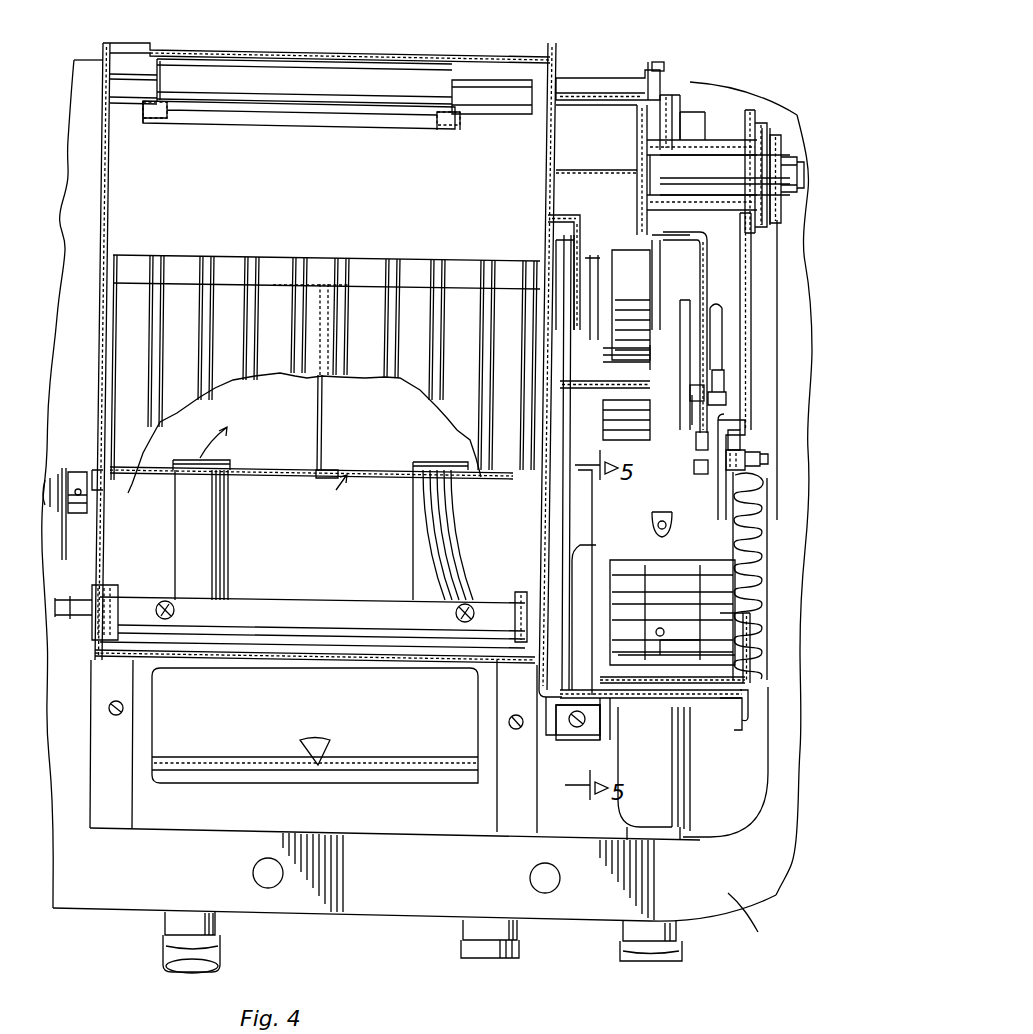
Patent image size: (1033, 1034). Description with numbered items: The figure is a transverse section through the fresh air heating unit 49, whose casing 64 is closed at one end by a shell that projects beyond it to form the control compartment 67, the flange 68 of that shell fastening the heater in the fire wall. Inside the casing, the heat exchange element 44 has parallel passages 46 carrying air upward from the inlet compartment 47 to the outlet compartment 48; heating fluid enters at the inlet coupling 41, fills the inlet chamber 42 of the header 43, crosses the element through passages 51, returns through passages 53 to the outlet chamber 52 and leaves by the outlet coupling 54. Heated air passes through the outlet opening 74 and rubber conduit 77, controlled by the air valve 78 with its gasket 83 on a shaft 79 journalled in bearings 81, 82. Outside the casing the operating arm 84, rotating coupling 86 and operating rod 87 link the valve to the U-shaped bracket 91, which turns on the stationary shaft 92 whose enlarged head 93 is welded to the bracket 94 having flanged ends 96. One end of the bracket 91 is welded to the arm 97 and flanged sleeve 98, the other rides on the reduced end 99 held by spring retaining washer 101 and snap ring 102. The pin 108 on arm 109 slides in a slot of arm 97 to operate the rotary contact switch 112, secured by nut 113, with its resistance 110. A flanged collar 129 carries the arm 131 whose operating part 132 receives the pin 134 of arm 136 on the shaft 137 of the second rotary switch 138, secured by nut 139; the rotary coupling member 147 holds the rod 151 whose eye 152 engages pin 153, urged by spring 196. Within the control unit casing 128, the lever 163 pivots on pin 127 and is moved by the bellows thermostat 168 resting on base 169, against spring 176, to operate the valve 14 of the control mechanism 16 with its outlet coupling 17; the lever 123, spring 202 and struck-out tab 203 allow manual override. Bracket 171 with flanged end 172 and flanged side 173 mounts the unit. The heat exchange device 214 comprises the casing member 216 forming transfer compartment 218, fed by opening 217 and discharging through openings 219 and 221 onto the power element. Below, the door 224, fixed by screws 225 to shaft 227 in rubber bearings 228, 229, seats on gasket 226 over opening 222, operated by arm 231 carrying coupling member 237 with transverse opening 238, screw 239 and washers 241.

The heating fluid control valve 14 is at (692, 776).
The temperature responsive heating fluid control mechanism 16 is at (741, 619).
The outlet coupling 17 is at (623, 940).
The inlet coupling 41 is at (218, 506).
The inlet chamber 42 is at (278, 466).
The heating fluid header 43 is at (331, 495).
The heat exchange element 44 is at (191, 245).
The parallel passages 46 is at (375, 282).
The inlet compartment 47 is at (118, 549).
The outlet compartment 48 is at (128, 159).
The fresh air heating unit 49 is at (371, 42).
The heating fluid passages 51 is at (295, 272).
The outlet chamber 52 is at (385, 462).
The heating fluid passages 53 is at (445, 292).
The outlet coupling 54 is at (425, 547).
The casing 64 is at (474, 55).
The control compartment 67 is at (748, 816).
The flange 68 is at (758, 926).
The outlet opening 74 is at (418, 70).
The rubber conduit 77 is at (190, 120).
The air valve 78 is at (300, 72).
The shaft 79 is at (322, 105).
The bearing 81 is at (120, 90).
The bearing 82 is at (495, 82).
The gasket 83 is at (450, 126).
The operating arm 84 is at (648, 62).
The rotating coupling 86 is at (670, 92).
The operating rod 87 is at (662, 62).
The U-shaped bracket 91 is at (684, 100).
The stationary shaft 92 is at (655, 163).
The enlarged head 93 is at (640, 134).
The bracket 94 is at (602, 78).
The flanged ends 96 is at (560, 72).
The arm 97 is at (708, 264).
The flanged sleeve 98 is at (690, 128).
The reduced end 99 is at (790, 174).
The spring retaining washer 101 is at (772, 138).
The snap ring 102 is at (784, 158).
The pin 108 is at (726, 374).
The arm 109 is at (692, 300).
The resistance 110 is at (592, 255).
The rotary contact switch 112 is at (618, 255).
The nut 113 is at (668, 285).
The lever 123 is at (614, 558).
The pin 127 is at (683, 600).
The control unit casing 128 is at (596, 550).
The flanged collar 129 is at (728, 140).
The arm 131 is at (752, 306).
The operating part 132 is at (718, 492).
The pin 134 is at (696, 441).
The arm 136 is at (694, 467).
The shaft 137 is at (706, 409).
The rotary switch 138 is at (620, 415).
The nut 139 is at (640, 356).
The rotary coupling member 147 is at (706, 388).
The rod 151 is at (747, 456).
The eye 152 is at (742, 440).
The pin 153 is at (770, 459).
The lever 163 is at (648, 606).
The bellows thermostat 168 is at (633, 660).
The base 169 is at (705, 690).
The bracket 171 is at (615, 703).
The flanged end 172 is at (558, 746).
The flanged side 173 is at (550, 727).
The spring 176 is at (625, 622).
The spring 196 is at (762, 496).
The spring 202 is at (674, 526).
The struck-out tab 203 is at (664, 524).
The heat exchange device 214 is at (570, 536).
The casing member 216 is at (575, 238).
The opening 217 is at (550, 218).
The transfer compartment 218 is at (560, 258).
The opening 219 is at (542, 700).
The opening 221 is at (568, 713).
The opening 222 is at (242, 790).
The door 224 is at (200, 747).
The screws 225 is at (176, 611).
The rubber gasket 226 is at (380, 777).
The shaft 227 is at (268, 601).
The rubber bearing 228 is at (118, 588).
The rubber bearing 229 is at (520, 592).
The arm 231 is at (72, 630).
The rotatable coupling member 237 is at (95, 466).
The transverse opening 238 is at (82, 494).
The screw 239 is at (56, 506).
The washers 241 is at (76, 472).